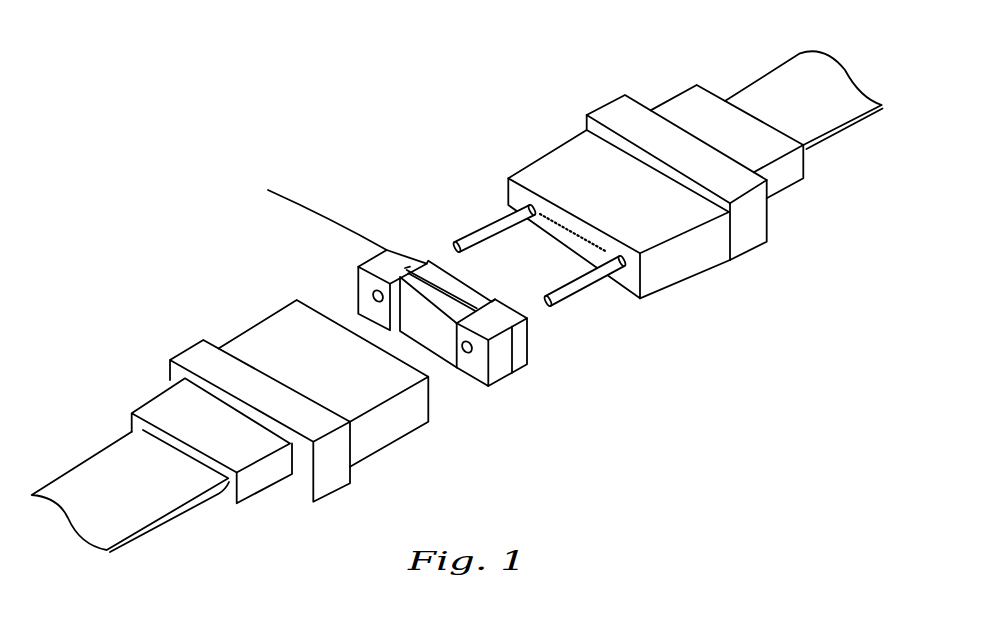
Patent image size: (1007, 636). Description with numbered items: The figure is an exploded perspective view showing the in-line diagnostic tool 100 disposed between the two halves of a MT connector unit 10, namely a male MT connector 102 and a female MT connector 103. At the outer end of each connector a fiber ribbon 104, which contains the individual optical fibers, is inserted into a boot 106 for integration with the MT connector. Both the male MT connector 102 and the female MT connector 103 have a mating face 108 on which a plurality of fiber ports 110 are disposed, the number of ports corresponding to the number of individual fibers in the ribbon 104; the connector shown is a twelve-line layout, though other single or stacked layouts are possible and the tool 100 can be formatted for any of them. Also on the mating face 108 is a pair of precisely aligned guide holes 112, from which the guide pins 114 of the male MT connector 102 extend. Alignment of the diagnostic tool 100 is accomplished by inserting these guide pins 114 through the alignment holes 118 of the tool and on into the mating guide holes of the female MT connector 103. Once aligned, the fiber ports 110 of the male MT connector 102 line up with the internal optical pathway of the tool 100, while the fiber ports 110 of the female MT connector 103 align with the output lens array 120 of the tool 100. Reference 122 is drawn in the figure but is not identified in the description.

The MT connector unit 10 is at (467, 303).
The in-line diagnostic tool 100 is at (520, 373).
The male MT connector 102 is at (700, 269).
The female MT connector 103 is at (390, 438).
The fiber ribbon 104 is at (843, 126).
The boot 106 is at (788, 182).
The mating face 108 is at (428, 394).
The fiber ports 110 is at (540, 213).
The guide holes 112 is at (507, 203).
The guide pins 114 is at (490, 227).
The alignment holes 118 is at (373, 297).
The output lens array 120 is at (420, 318).
The alignment line 122 is at (300, 203).